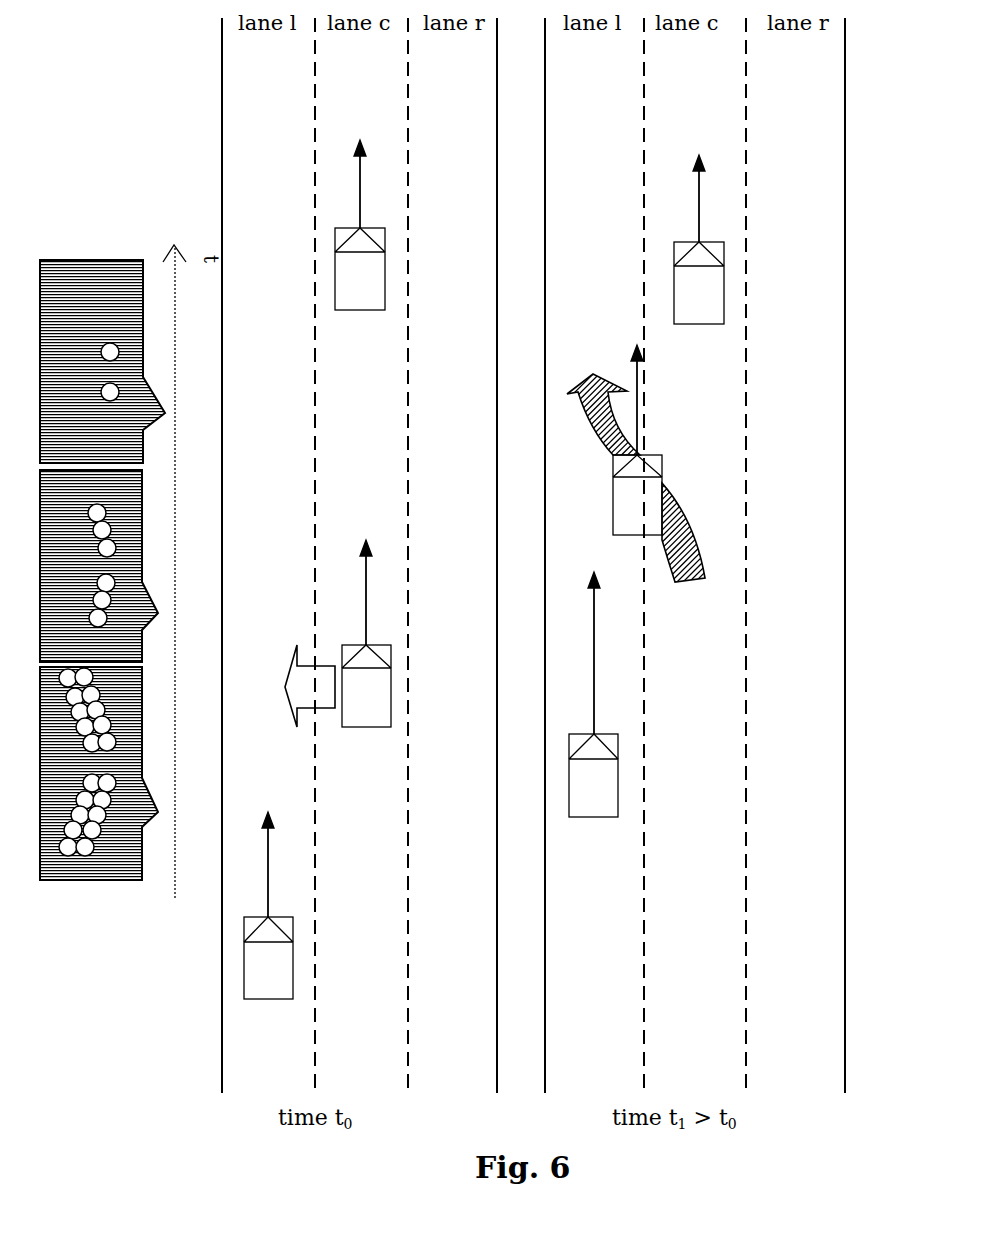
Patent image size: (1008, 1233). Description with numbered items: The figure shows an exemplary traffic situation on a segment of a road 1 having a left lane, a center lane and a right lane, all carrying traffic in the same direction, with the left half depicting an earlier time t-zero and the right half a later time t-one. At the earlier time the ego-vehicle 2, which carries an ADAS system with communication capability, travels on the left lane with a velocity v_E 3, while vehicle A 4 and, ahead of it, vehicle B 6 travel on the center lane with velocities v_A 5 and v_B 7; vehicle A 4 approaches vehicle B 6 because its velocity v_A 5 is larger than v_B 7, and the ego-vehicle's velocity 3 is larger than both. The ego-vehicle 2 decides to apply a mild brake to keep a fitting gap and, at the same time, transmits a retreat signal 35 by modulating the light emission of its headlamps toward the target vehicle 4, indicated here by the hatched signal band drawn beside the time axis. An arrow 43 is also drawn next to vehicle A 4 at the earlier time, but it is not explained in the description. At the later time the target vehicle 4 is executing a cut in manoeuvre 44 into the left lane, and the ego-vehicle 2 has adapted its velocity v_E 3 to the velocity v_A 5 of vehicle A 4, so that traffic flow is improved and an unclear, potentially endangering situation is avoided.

The road 1 is at (487, 851).
The ego-vehicle 2 is at (244, 970).
The velocity v_E1 3 is at (268, 878).
The vehicle A 4 is at (391, 668).
The velocity v_A 5 is at (365, 609).
The vehicle B 6 is at (352, 278).
The velocity v_B 7 is at (360, 193).
The retreat signal 35 is at (98, 262).
The lane change intention arrow 43 is at (290, 690).
The cut in manoeuvre 44 is at (583, 393).